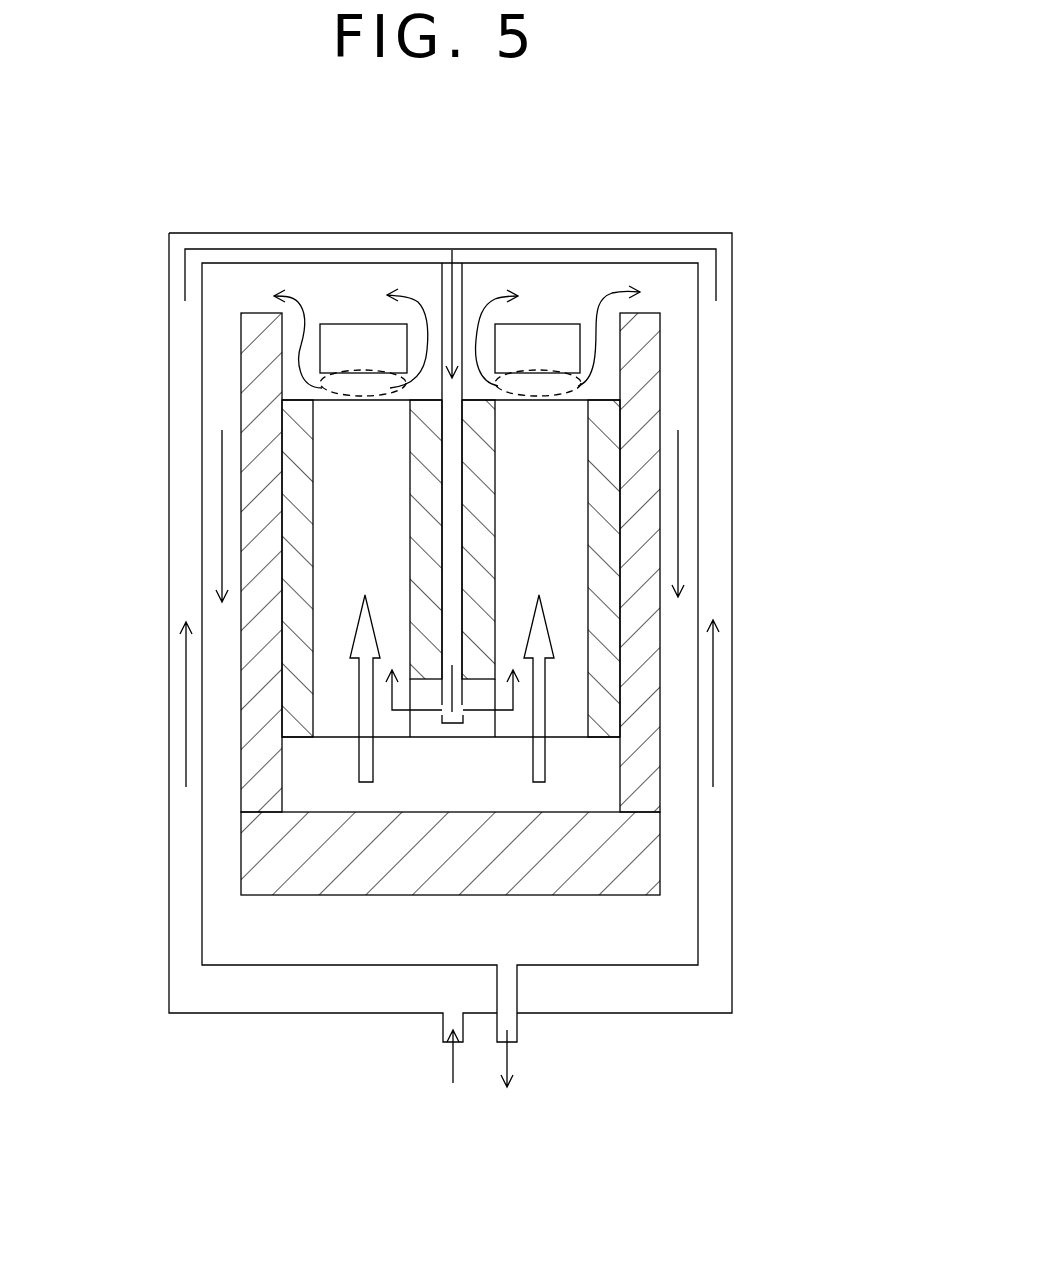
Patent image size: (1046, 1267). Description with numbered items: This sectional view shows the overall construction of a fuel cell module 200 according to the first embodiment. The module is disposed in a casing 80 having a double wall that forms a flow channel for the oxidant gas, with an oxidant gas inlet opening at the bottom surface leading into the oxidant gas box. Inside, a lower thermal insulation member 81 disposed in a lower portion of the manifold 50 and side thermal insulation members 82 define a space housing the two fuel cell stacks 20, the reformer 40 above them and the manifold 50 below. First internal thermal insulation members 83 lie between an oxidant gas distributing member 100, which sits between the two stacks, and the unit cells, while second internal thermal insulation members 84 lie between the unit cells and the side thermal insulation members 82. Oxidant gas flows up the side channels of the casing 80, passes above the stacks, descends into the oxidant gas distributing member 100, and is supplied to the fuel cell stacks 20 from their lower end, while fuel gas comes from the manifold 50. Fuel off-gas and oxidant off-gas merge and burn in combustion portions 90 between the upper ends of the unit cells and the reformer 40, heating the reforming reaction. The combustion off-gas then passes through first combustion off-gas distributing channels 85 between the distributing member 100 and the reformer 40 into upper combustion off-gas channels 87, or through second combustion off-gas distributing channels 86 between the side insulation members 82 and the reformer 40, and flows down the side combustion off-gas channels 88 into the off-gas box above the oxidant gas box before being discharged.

The fuel cell module 200 is at (735, 178).
The casing 80 is at (170, 972).
The lower thermal insulation member 81 is at (252, 850).
The side thermal insulation members 82 is at (258, 668).
The first internal thermal insulation members 83 is at (418, 512).
The second internal thermal insulation members 84 is at (302, 568).
The first combustion off-gas distributing channels 85 is at (421, 320).
The second combustion off-gas distributing channels 86 is at (313, 335).
The upper combustion off-gas channels 87 is at (360, 288).
The side combustion off-gas channels 88 is at (217, 398).
The combustion portions 90 is at (325, 378).
The fuel cell stack 20 is at (294, 473).
The reformer 40 is at (543, 323).
The manifold 50 is at (590, 776).
The oxidant gas distributing member 100 is at (462, 286).